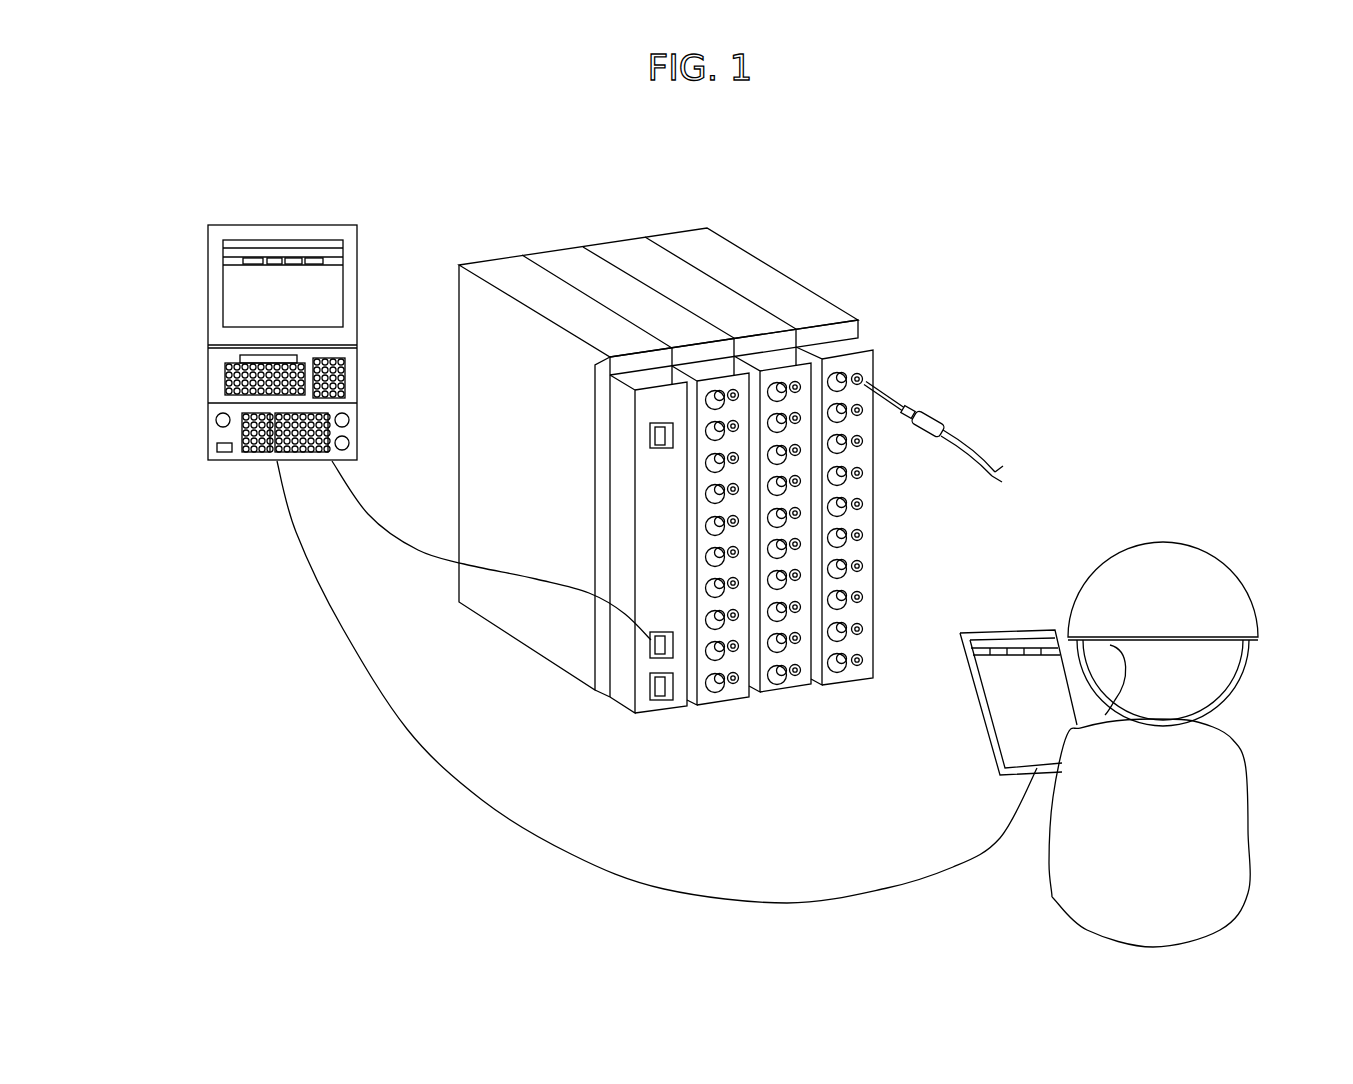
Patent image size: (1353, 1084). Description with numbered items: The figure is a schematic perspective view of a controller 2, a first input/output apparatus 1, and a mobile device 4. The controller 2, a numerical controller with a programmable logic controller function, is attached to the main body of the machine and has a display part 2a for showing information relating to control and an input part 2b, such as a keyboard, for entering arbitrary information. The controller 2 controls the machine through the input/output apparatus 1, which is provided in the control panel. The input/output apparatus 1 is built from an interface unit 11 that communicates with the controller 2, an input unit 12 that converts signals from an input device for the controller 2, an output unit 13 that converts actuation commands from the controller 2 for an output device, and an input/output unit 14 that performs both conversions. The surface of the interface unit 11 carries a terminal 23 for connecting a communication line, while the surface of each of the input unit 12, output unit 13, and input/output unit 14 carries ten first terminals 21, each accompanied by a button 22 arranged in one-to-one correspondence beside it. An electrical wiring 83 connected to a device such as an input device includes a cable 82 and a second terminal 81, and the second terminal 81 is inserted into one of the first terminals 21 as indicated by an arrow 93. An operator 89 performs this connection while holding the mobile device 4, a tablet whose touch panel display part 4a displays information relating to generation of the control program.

The first input/output apparatus 1 is at (477, 193).
The controller 2 is at (241, 307).
The display part 2a is at (255, 290).
The input part 2b is at (228, 388).
The mobile device 4 is at (1003, 671).
The display part 4a is at (1022, 672).
The interface unit 11 is at (545, 469).
The input unit 12 is at (562, 262).
The output unit 13 is at (622, 255).
The input/output unit 14 is at (683, 247).
The first terminals 21 is at (797, 457).
The buttons 22 is at (717, 397).
The terminal 23 is at (650, 435).
The second terminal 81 is at (927, 422).
The cable 82 is at (970, 447).
The electrical wiring 83 is at (964, 391).
The operator 89 is at (1230, 768).
The arrow 93 is at (893, 398).